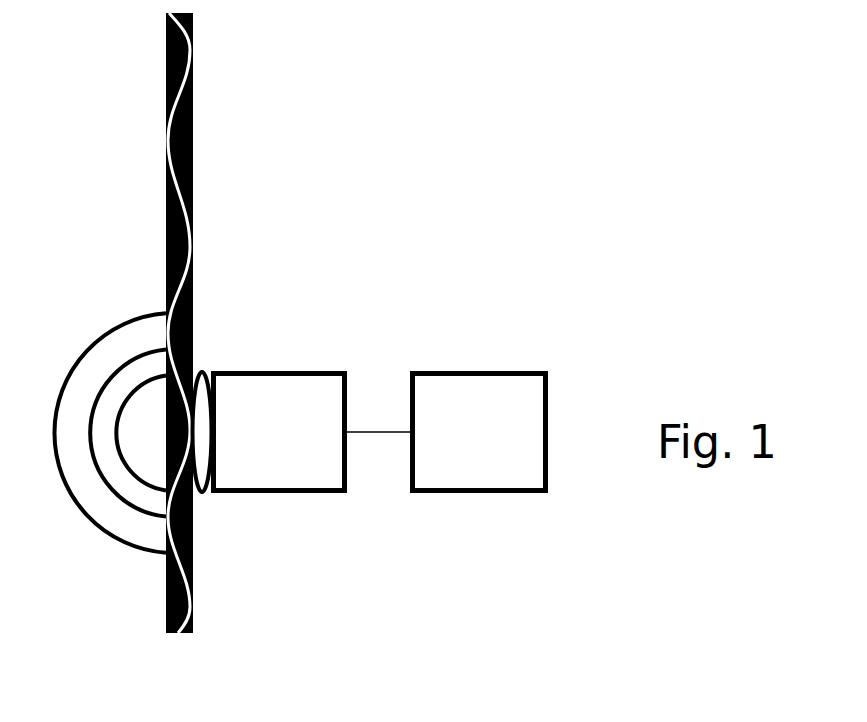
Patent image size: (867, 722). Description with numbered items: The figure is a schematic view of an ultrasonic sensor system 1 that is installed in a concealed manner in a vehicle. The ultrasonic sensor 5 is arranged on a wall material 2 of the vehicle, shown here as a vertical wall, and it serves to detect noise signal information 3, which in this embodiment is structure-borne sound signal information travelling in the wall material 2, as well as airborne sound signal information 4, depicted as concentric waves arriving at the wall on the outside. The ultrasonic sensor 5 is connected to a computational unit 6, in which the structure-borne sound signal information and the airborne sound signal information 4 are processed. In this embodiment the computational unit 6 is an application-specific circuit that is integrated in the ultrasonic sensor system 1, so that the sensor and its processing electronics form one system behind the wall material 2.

The ultrasonic sensor system 1 is at (369, 434).
The wall material 2 is at (190, 106).
The noise signal information 3 is at (187, 50).
The airborne sound signal information 4 is at (86, 345).
The ultrasonic sensor 5 is at (238, 370).
The computational unit 6 is at (440, 370).